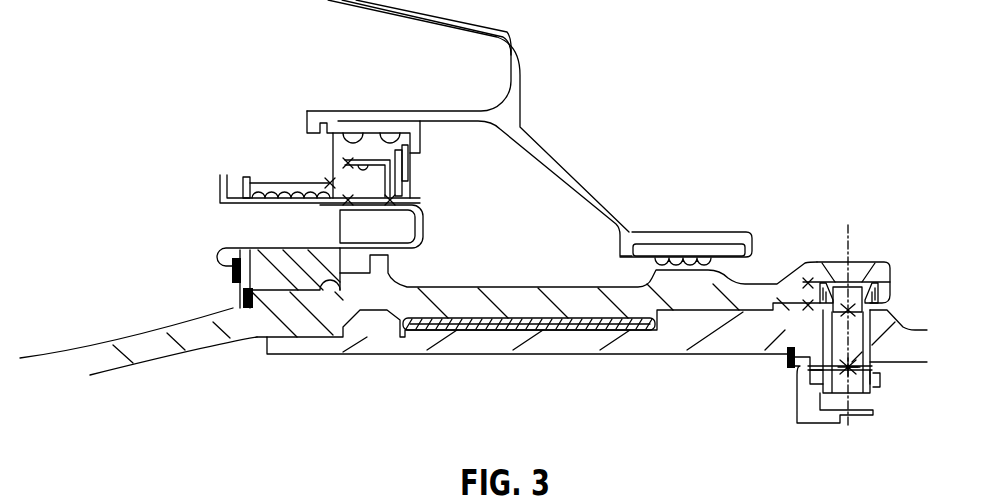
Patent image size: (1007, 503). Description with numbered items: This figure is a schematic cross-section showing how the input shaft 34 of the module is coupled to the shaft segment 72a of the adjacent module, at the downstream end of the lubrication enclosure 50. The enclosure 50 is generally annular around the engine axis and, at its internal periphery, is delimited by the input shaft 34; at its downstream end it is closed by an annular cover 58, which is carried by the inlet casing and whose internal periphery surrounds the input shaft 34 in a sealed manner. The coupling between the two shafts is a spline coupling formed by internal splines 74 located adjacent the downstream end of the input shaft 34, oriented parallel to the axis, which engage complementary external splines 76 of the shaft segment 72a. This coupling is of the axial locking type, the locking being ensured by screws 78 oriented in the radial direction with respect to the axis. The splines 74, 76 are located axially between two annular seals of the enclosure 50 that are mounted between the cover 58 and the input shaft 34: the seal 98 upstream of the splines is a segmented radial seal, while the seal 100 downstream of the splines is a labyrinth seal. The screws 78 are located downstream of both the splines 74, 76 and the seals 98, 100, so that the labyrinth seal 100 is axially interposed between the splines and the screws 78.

The lubrication enclosure 50 is at (302, 70).
The annular cover 58 is at (561, 168).
The labyrinth seal 100 is at (693, 260).
The screws 78 is at (857, 300).
The internal splines 74 is at (500, 343).
The external splines 76 is at (463, 327).
The shaft segment 72a is at (727, 347).
The input shaft 34 is at (368, 290).
The segmented radial seal 98 is at (348, 200).